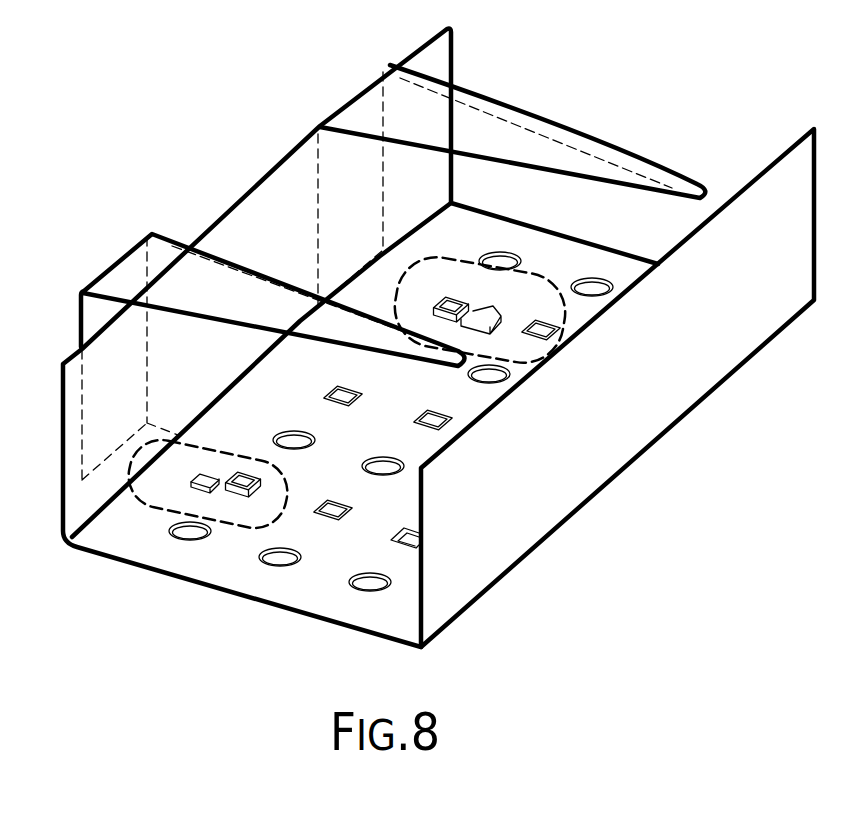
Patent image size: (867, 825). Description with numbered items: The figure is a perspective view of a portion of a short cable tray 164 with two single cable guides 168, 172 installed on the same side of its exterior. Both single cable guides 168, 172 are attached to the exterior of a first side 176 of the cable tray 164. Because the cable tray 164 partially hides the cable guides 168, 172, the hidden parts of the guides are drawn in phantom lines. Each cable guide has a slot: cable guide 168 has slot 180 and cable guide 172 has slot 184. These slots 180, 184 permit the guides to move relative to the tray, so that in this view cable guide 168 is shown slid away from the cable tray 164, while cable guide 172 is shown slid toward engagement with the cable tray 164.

The cable tray 164 is at (640, 395).
The single cable guide 168 is at (220, 288).
The single cable guide 172 is at (448, 116).
The first side 176 is at (268, 246).
The slot 180 is at (215, 470).
The slot 184 is at (496, 306).